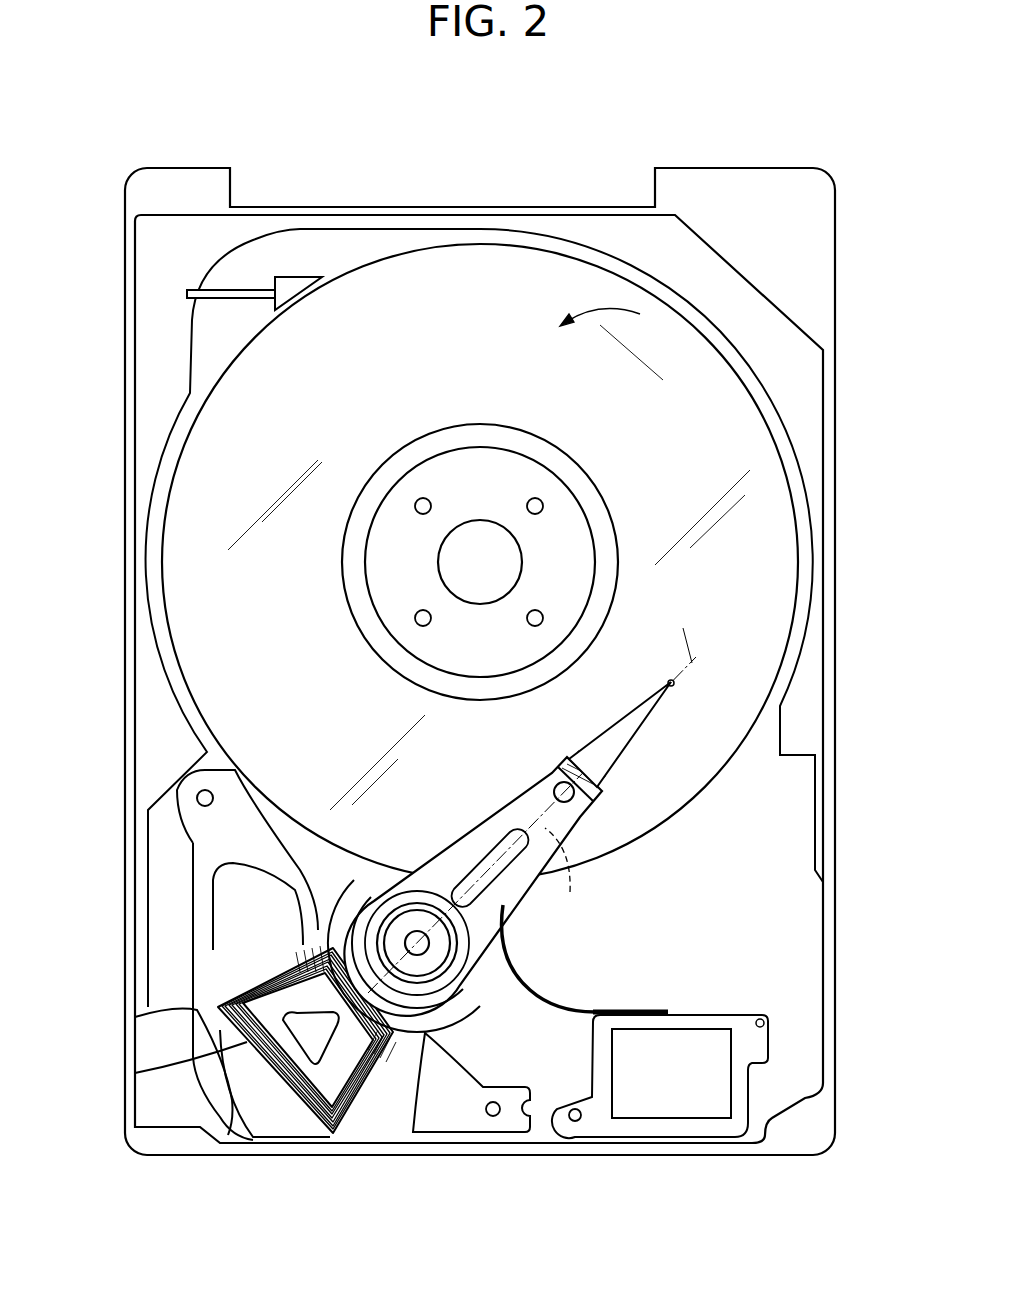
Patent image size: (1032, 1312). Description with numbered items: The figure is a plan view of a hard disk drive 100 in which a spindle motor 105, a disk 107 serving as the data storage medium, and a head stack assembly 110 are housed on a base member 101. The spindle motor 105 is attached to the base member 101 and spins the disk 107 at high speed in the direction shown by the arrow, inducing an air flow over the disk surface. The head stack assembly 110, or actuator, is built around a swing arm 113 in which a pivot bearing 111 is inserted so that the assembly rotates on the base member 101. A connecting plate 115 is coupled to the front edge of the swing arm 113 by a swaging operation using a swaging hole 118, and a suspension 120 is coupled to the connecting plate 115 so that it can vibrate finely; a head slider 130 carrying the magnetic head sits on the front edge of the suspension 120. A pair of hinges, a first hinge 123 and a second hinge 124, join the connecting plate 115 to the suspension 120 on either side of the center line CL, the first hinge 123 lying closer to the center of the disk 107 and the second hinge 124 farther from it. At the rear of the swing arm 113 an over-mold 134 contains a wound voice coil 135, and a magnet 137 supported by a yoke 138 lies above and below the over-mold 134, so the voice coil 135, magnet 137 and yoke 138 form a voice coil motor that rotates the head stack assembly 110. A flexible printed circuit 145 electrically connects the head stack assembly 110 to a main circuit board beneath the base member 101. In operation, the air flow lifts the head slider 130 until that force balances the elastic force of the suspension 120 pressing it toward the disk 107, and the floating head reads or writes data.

The hard disk drive 100 is at (848, 148).
The base member 101 is at (155, 750).
The spindle motor 105 is at (478, 470).
The disk 107 is at (775, 583).
The head stack assembly 110 is at (468, 815).
The pivot bearing 111 is at (416, 935).
The swing arm 113 is at (474, 940).
The connecting plate 115 is at (565, 875).
The swaging hole 118 is at (560, 786).
The suspension 120 is at (625, 718).
The first hinge 123 is at (566, 750).
The second hinge 124 is at (605, 797).
The head slider 130 is at (668, 681).
The over-mold 134 is at (215, 1008).
The voice coil 135 is at (250, 1040).
The magnet 137 is at (407, 1115).
The yoke 138 is at (235, 1100).
The flexible printed circuit 145 is at (568, 1003).